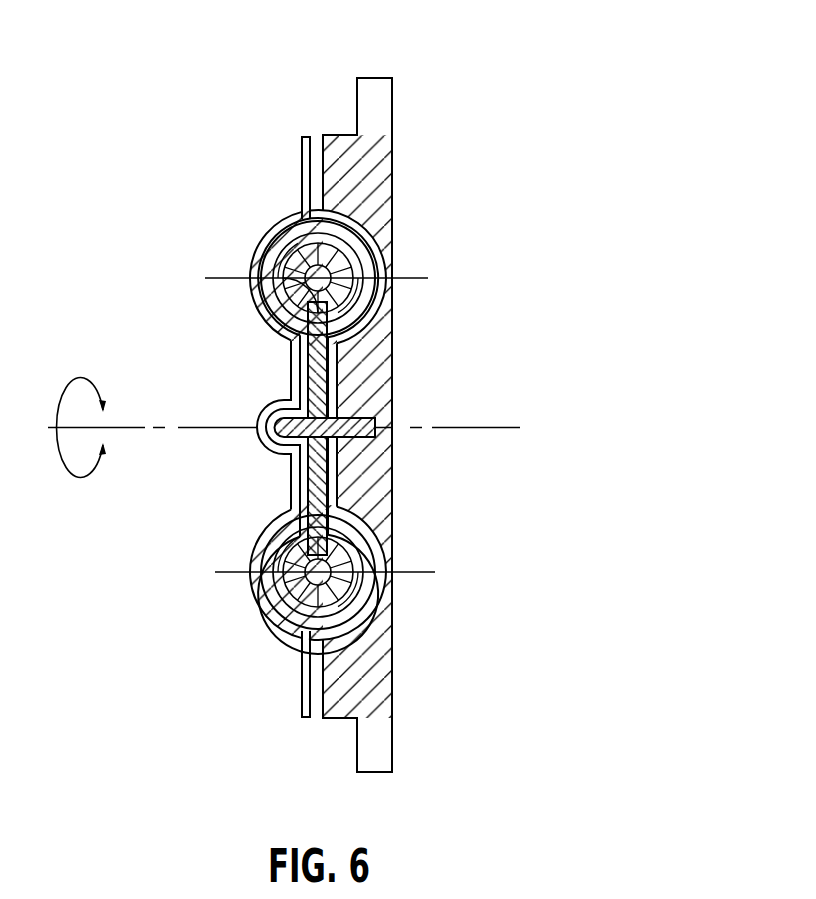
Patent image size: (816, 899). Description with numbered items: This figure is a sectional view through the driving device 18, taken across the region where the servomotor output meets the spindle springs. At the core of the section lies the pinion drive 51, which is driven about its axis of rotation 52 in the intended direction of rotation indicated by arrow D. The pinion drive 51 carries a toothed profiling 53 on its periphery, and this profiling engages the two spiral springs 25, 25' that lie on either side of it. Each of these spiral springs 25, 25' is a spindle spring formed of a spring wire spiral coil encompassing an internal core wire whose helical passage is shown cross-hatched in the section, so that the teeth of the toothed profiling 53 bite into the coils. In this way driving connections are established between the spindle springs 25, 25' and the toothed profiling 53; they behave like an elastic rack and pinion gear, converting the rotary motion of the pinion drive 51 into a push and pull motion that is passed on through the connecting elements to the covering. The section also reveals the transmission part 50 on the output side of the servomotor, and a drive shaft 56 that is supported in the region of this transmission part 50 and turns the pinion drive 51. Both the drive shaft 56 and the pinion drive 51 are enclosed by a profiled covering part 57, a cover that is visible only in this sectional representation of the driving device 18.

The driving device 18 is at (155, 98).
The spiral spring 25 is at (309, 612).
The spiral spring 25' is at (293, 240).
The transmission part 50 is at (382, 378).
The pinion drive 51 is at (326, 493).
The axis of rotation 52 is at (474, 428).
The toothed profiling 53 is at (300, 316).
The drive shaft 56 is at (365, 436).
The profiled covering part 57 is at (290, 488).
The direction of rotation D is at (62, 400).